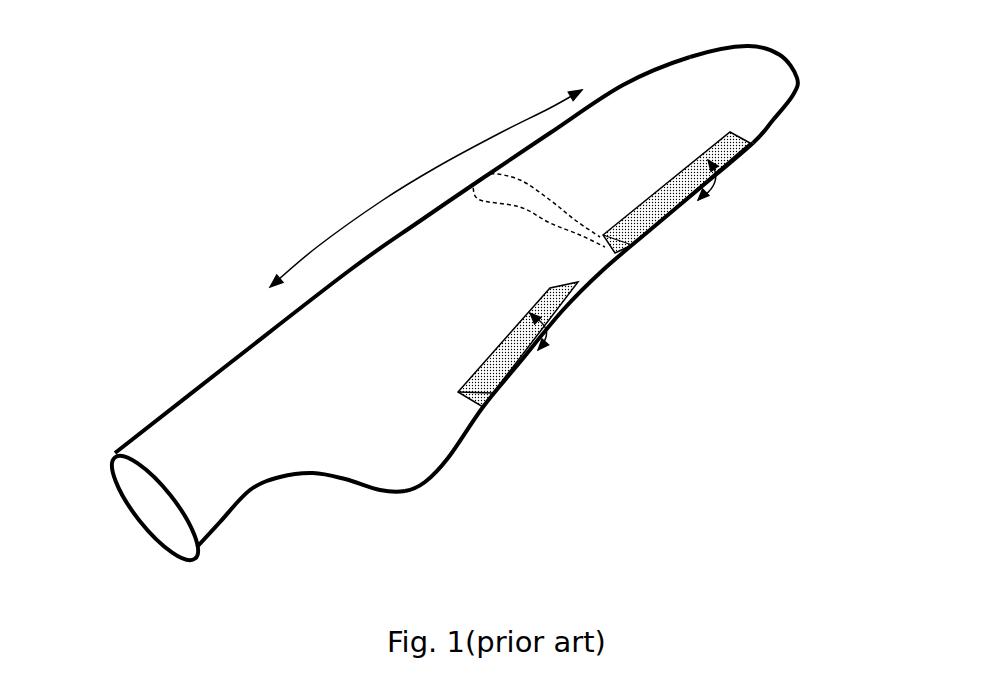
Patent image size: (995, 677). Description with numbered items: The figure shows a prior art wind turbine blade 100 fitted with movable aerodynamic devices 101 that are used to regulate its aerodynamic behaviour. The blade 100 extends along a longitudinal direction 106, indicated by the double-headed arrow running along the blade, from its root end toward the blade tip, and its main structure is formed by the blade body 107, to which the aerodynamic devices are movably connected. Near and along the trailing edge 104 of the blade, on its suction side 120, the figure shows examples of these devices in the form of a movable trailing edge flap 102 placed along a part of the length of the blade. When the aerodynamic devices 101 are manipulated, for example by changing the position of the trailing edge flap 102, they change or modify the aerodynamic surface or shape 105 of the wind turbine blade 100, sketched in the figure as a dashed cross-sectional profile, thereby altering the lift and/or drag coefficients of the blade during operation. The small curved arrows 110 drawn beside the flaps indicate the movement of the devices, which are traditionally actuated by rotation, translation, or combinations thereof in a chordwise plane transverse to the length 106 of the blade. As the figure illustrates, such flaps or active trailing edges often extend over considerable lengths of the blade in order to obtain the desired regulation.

The wind turbine blade 100 is at (633, 68).
The aerodynamic device 101 is at (647, 225).
The movable trailing edge flap 102 is at (490, 373).
The trailing edge 104 is at (448, 458).
The aerodynamic surface or shape 105 is at (588, 229).
The longitudinal direction 106 is at (426, 188).
The blade body 107 is at (758, 110).
The flap deflection direction 110 is at (752, 188).
The suction side 120 is at (385, 458).